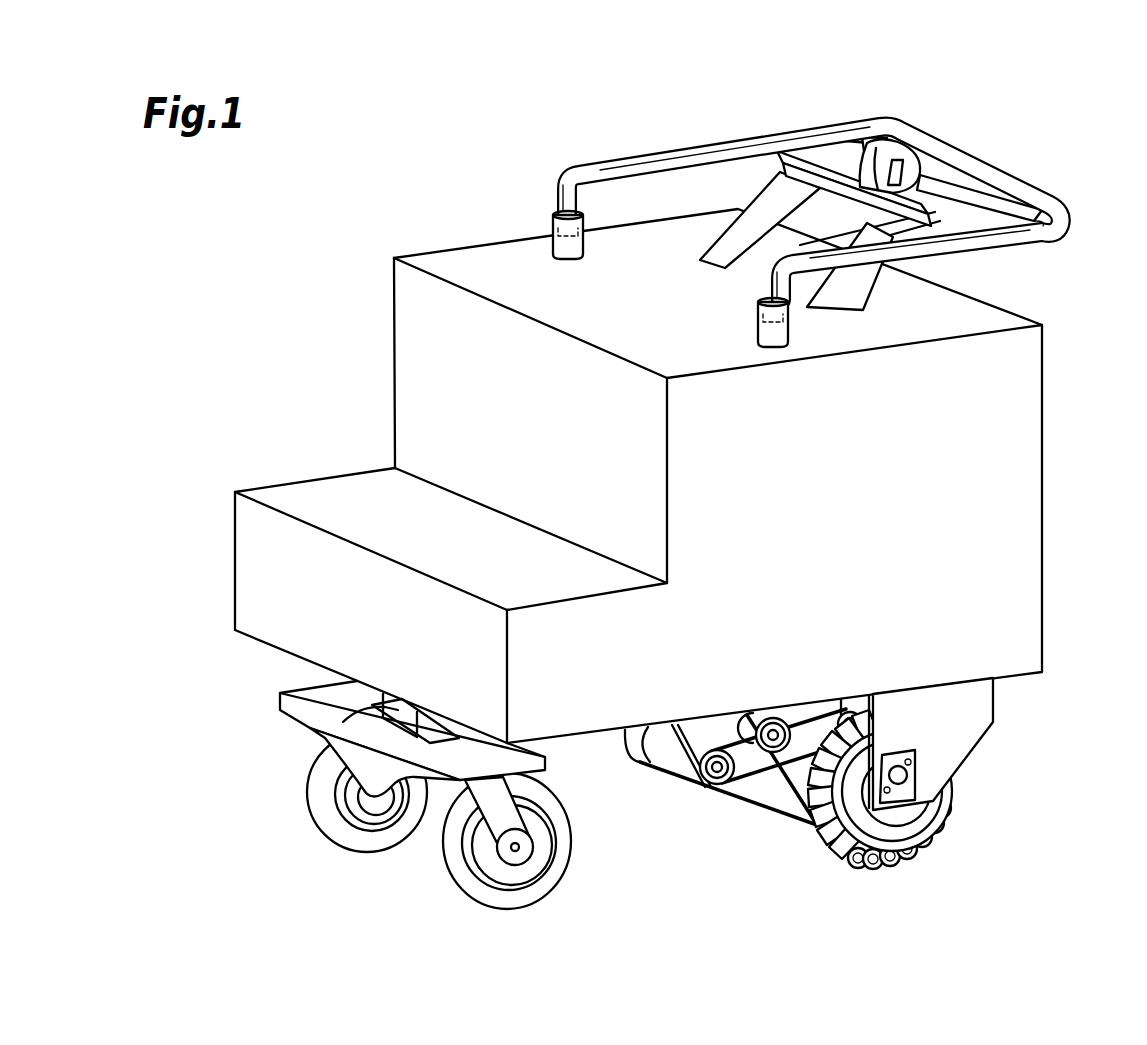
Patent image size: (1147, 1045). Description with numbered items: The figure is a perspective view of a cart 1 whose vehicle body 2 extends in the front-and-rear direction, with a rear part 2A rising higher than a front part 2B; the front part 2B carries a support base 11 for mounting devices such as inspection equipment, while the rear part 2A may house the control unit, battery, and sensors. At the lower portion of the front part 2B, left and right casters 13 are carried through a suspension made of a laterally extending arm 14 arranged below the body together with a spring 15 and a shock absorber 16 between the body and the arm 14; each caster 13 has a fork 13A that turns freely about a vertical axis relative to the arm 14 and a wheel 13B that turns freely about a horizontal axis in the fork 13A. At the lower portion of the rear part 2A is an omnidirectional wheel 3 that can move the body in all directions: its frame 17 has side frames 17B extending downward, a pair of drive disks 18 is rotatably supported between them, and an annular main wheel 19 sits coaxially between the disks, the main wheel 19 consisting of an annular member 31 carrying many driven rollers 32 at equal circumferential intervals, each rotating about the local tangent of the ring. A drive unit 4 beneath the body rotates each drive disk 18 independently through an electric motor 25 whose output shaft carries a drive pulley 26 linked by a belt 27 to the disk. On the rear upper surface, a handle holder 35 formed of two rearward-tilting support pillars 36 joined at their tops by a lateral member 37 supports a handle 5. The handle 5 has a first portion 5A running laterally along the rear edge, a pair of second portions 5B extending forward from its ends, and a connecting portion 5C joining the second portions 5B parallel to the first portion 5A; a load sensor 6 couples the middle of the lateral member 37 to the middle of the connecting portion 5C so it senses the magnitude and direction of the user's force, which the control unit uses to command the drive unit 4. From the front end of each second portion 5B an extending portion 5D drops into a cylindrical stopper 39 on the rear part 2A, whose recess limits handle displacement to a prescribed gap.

The cart 1 is at (468, 136).
The vehicle body 2 is at (1044, 498).
The rear part 2A is at (1030, 381).
The front part 2B is at (243, 569).
The omnidirectional wheel 3 is at (947, 829).
The drive unit 4 is at (718, 790).
The handle 5 is at (723, 142).
The first portion 5A is at (1030, 190).
The second portion 5B is at (680, 152).
The connecting portion 5C is at (977, 207).
The extending portion 5D is at (562, 188).
The load sensor 6 is at (890, 153).
The support base 11 is at (345, 487).
The caster 13 is at (320, 832).
The fork 13A is at (503, 837).
The wheel 13B is at (553, 877).
The arm 14 is at (313, 695).
The spring 15 is at (327, 735).
The shock absorber 16 is at (370, 714).
The frame 17 is at (996, 701).
The side frame 17B is at (957, 768).
The drive disk 18 is at (905, 832).
The main wheel 19 is at (830, 857).
The electric motor 25 is at (653, 753).
The drive pulley 26 is at (705, 783).
The belt 27 is at (778, 810).
The annular member 31 is at (842, 867).
The driven roller 32 is at (873, 870).
The handle holder 35 is at (904, 72).
The support pillar 36 is at (762, 190).
The lateral member 37 is at (820, 178).
The stopper 39 is at (557, 247).